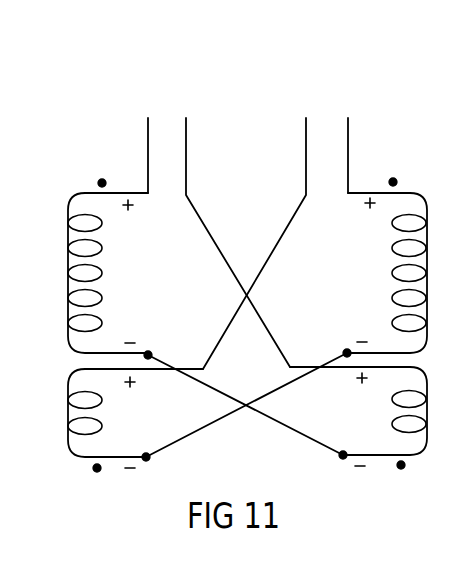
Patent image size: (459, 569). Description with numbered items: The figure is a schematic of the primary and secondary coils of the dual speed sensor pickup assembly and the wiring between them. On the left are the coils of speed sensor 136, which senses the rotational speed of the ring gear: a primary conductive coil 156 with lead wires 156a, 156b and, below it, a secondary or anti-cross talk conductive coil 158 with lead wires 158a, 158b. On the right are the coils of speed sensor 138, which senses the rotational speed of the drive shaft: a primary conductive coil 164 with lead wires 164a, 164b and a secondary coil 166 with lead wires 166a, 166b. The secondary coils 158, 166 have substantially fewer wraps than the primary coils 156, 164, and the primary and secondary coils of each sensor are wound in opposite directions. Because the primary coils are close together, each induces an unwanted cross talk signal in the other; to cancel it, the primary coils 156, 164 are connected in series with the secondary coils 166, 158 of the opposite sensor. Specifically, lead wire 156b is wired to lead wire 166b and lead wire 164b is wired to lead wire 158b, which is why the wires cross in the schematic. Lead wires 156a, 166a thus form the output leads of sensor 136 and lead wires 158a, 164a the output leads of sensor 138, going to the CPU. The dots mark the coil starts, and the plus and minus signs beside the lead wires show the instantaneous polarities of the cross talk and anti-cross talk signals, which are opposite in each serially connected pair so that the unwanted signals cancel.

The speed sensor 136 is at (50, 198).
The speed sensor 138 is at (434, 180).
The primary conductive coil 156 is at (102, 270).
The lead wire 156a is at (148, 118).
The lead wire 156b is at (108, 353).
The secondary or anti-cross talk conductive coil 158 is at (98, 427).
The lead wire 158a is at (306, 133).
The lead wire 158b is at (113, 457).
The primary conductive coil 164 is at (393, 243).
The lead wire 164a is at (348, 118).
The lead wire 164b is at (385, 353).
The secondary or anti-cross talk conductive coil 166 is at (391, 425).
The lead wire 166a is at (186, 118).
The lead wire 166b is at (382, 455).